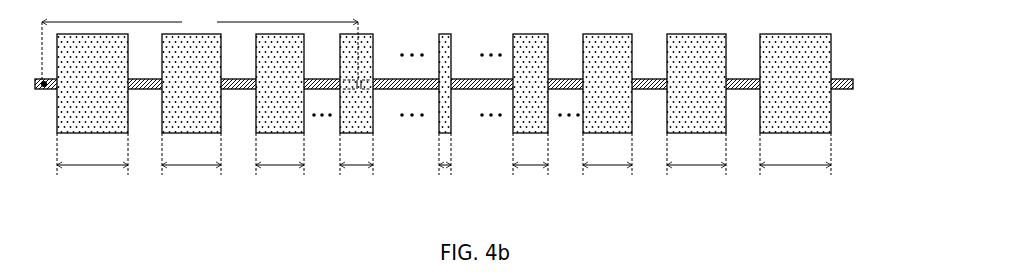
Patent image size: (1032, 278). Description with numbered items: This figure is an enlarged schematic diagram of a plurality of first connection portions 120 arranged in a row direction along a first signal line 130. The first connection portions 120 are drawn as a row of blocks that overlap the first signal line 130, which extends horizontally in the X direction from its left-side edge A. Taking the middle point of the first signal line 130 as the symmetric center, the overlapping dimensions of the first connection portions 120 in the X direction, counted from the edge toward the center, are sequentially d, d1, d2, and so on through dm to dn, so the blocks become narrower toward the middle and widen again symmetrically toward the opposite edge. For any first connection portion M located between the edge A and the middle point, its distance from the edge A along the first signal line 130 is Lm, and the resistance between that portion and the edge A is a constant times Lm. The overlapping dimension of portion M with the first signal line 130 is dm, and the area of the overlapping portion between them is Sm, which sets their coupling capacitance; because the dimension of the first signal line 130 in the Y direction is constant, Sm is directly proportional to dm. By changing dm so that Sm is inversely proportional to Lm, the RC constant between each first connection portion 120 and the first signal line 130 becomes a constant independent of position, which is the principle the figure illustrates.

The first connection portion 120 is at (818, 55).
The first signal line 130 is at (835, 80).
The area of the overlapping portion Sm is at (362, 80).
The distance from first connection portion M to edge A Lm is at (200, 46).
The edge of the left side of the first signal line A is at (44, 96).
The overlapping dimension d is at (444, 167).
The overlapping dimension d1 is at (444, 167).
The overlapping dimension d2 is at (444, 167).
The overlapping dimension of first connection portion M dm is at (444, 167).
The overlapping dimension dn is at (449, 167).